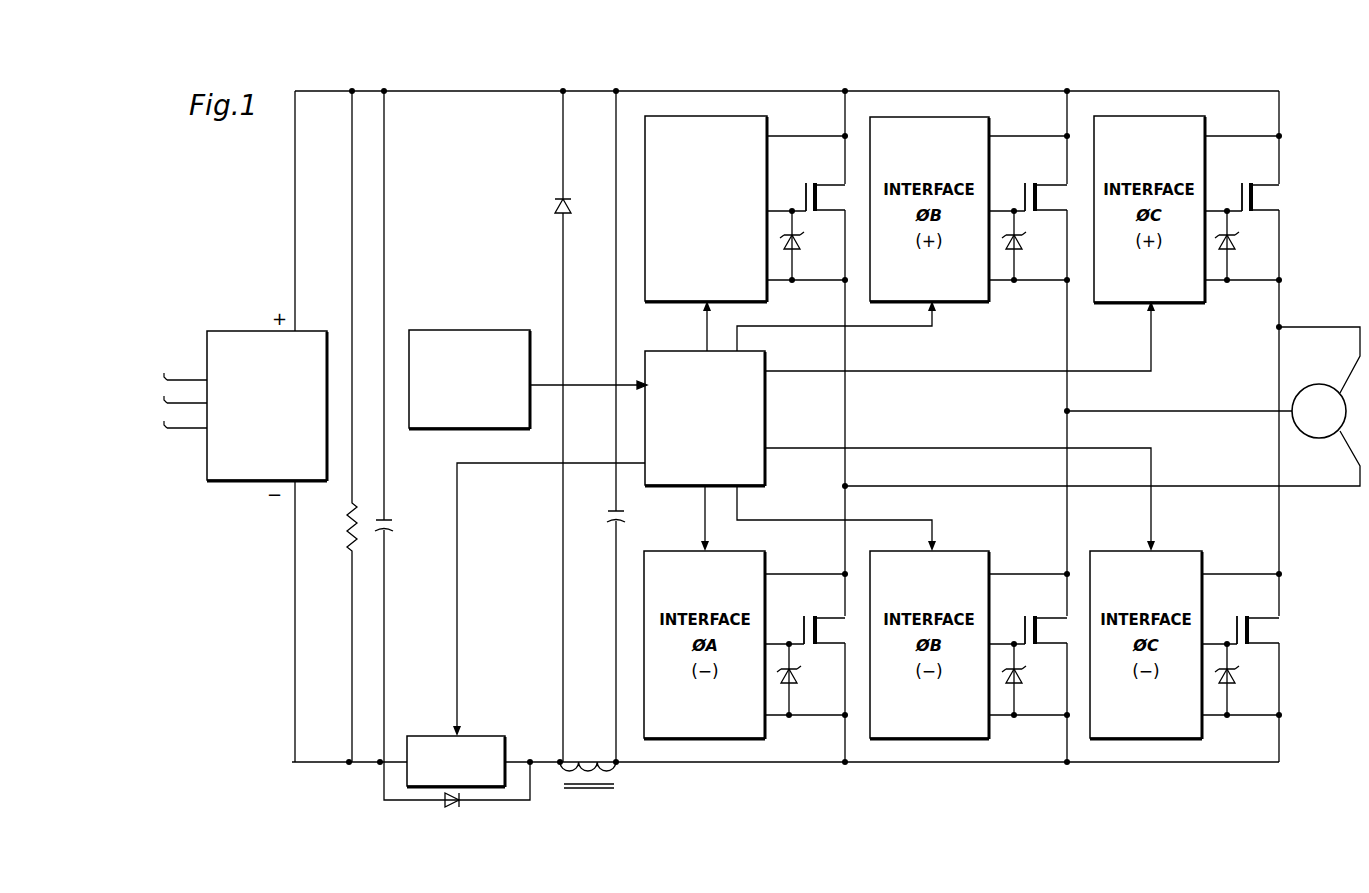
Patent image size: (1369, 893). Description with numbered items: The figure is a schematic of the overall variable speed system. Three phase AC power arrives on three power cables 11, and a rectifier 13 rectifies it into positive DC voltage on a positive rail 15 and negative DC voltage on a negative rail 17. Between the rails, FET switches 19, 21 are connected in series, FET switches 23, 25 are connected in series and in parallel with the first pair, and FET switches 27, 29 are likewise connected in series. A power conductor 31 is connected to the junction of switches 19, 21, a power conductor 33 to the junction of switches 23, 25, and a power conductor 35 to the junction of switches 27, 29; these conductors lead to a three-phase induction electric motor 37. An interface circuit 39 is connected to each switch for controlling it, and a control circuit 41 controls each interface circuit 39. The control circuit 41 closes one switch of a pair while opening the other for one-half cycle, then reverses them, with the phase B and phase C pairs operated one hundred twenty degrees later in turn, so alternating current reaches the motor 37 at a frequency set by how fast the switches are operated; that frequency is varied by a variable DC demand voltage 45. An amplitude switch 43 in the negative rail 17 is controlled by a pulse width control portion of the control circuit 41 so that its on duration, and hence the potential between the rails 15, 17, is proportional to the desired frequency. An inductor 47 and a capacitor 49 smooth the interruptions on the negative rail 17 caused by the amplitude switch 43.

The power cables 11 is at (184, 372).
The rectifier 13 is at (250, 328).
The positive rail 15 is at (318, 62).
The negative rail 17 is at (322, 761).
The FET switch 19 is at (825, 179).
The FET switch 21 is at (825, 613).
The FET switch 23 is at (1051, 179).
The FET switch 25 is at (1051, 613).
The FET switch 27 is at (1269, 179).
The FET switch 29 is at (1267, 613).
The power conductor 31 is at (1312, 484).
The power conductor 33 is at (1150, 408).
The power conductor 35 is at (1307, 324).
The three-phase induction electric motor 37 is at (1323, 381).
The interface circuit 39 is at (688, 113).
The control circuit 41 is at (763, 405).
The amplitude switch 43 is at (482, 733).
The variable DC demand voltage 45 is at (426, 425).
The inductor 47 is at (614, 762).
The capacitor 49 is at (620, 508).